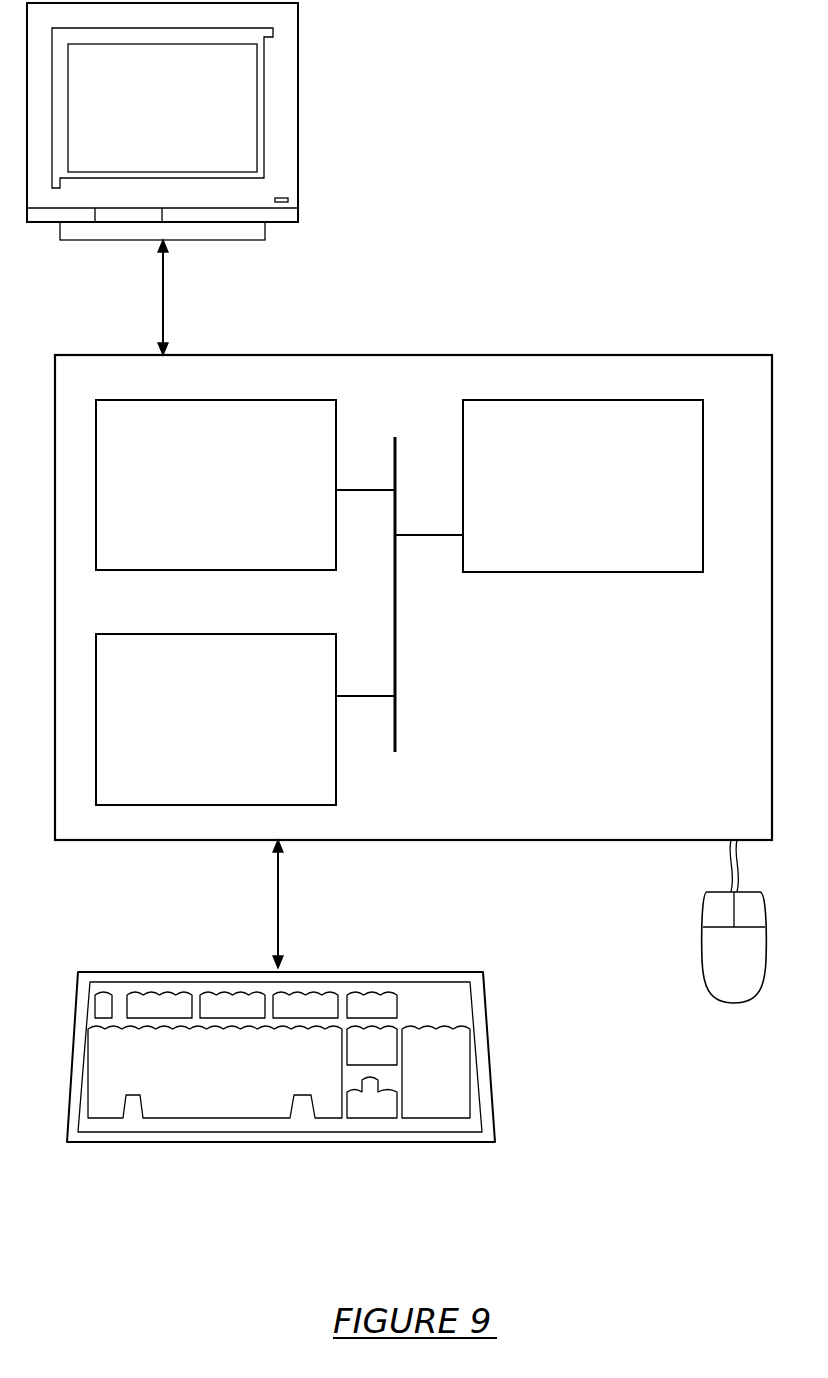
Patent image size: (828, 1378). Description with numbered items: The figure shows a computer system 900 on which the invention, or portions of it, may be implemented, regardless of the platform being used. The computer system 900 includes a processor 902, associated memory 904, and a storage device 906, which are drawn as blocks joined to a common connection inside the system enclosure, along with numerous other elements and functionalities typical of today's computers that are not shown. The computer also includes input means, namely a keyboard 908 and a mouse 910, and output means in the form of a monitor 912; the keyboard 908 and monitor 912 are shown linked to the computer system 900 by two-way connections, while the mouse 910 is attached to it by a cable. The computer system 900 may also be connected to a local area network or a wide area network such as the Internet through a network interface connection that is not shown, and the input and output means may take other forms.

The computer system 900 is at (651, 282).
The processor 902 is at (190, 499).
The associated memory 904 is at (190, 734).
The storage device 906 is at (577, 500).
The keyboard 908 is at (170, 1080).
The mouse 910 is at (709, 972).
The monitor 912 is at (143, 135).